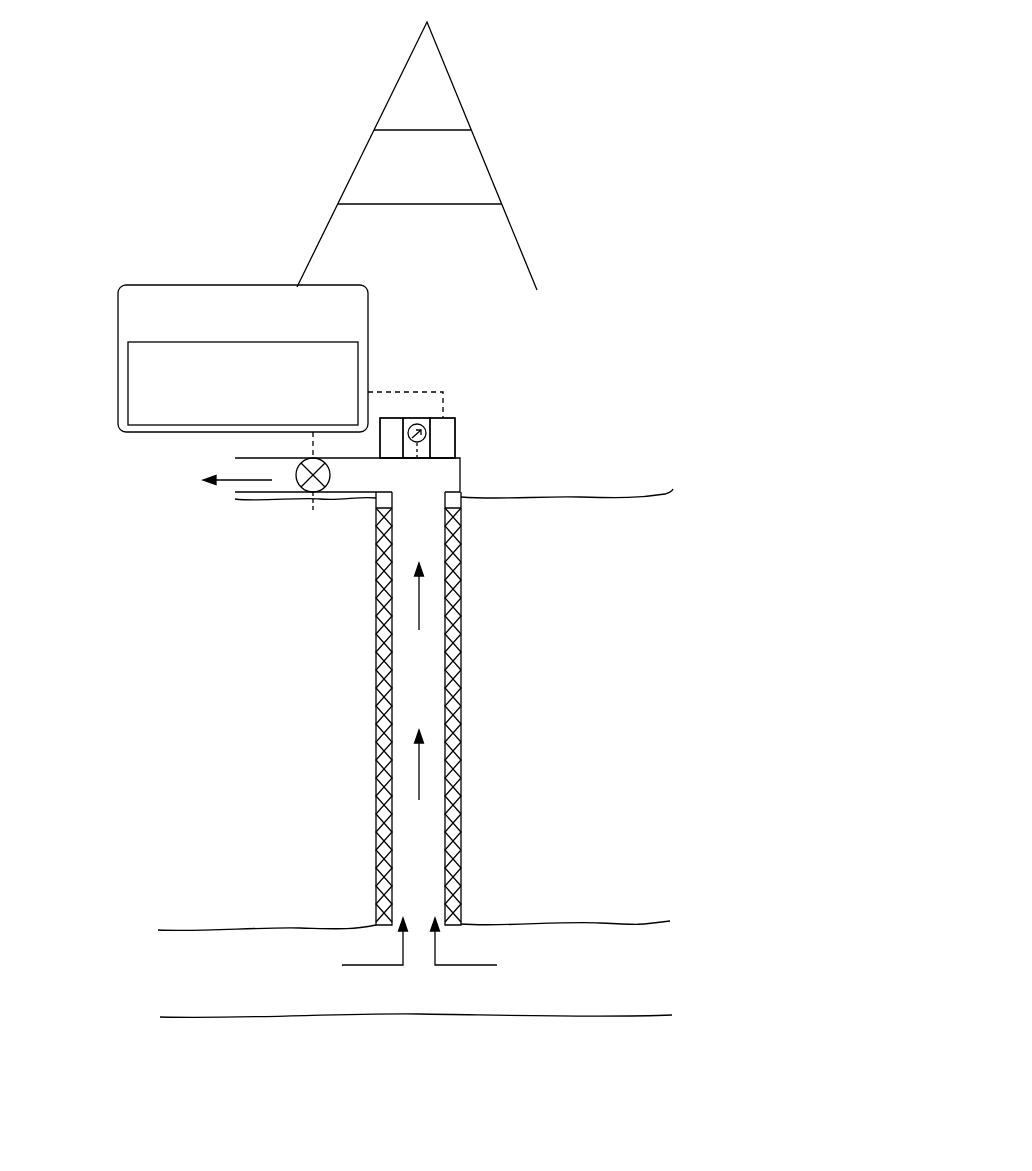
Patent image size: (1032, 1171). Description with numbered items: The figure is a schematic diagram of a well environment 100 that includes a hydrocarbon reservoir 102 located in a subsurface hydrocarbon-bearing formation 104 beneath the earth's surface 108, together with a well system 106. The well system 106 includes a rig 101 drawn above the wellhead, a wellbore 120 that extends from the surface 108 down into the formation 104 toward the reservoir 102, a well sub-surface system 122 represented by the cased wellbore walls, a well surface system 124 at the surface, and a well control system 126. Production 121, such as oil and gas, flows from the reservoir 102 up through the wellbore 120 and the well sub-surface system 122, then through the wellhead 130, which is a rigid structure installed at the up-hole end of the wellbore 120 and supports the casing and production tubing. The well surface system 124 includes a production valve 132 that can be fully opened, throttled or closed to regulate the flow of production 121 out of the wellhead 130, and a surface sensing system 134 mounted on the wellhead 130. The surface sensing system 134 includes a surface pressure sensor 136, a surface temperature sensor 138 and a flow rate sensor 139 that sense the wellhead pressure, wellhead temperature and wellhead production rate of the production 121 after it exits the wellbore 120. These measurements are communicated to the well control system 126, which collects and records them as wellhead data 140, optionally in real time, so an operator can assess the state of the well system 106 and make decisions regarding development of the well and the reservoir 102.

The well environment 100 is at (549, 171).
The rig 101 is at (481, 84).
The hydrocarbon reservoir 102 is at (593, 989).
The hydrocarbon-bearing formation 104 is at (603, 796).
The well system 106 is at (219, 261).
The surface 108 is at (550, 508).
The wellbore 120 is at (464, 651).
The production 121 is at (170, 468).
The well sub-surface system 122 is at (370, 741).
The well surface system 124 is at (636, 344).
The well control system 126 is at (160, 338).
The wellhead 130 is at (463, 489).
The production valve 132 is at (313, 512).
The surface sensing system 134 is at (459, 434).
The surface pressure sensor 136 is at (415, 418).
The surface temperature sensor 138 is at (446, 417).
The flow rate sensor 139 is at (390, 418).
The wellhead data 140 is at (260, 406).